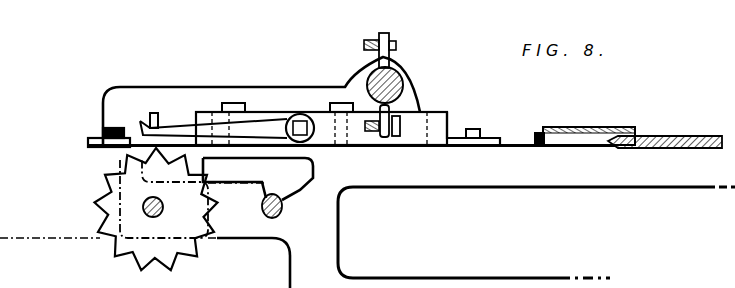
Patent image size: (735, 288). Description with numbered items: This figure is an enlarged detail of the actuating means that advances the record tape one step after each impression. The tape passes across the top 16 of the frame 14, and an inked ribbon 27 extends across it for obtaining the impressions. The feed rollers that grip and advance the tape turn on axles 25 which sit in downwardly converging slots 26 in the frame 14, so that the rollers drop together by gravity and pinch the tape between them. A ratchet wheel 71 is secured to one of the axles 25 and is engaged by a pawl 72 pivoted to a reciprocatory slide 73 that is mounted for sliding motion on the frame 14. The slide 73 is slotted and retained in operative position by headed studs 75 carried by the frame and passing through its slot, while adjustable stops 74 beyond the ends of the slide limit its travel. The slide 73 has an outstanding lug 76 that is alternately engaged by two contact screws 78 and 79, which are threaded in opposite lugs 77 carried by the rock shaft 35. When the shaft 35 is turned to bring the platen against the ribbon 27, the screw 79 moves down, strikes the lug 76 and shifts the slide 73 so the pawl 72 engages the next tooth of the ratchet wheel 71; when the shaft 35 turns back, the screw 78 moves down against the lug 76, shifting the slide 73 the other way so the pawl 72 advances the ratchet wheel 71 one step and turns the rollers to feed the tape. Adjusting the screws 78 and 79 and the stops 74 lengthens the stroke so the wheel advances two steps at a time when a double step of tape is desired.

The frame 14 is at (433, 287).
The top 16 is at (656, 136).
The axles 25 is at (146, 208).
The downwardly converging slots 26 is at (168, 215).
The inked ribbon 27 is at (588, 127).
The rock shaft 35 is at (402, 79).
The ratchet wheel 71 is at (100, 176).
The pawl 72 is at (185, 125).
The reciprocatory slide 73 is at (265, 113).
The adjustable stops 74 is at (150, 118).
The headed studs 75 is at (236, 103).
The outstanding lug 76 is at (396, 137).
The lugs 77 is at (384, 33).
The contact screw 78 is at (370, 133).
The contact screw 79 is at (396, 44).